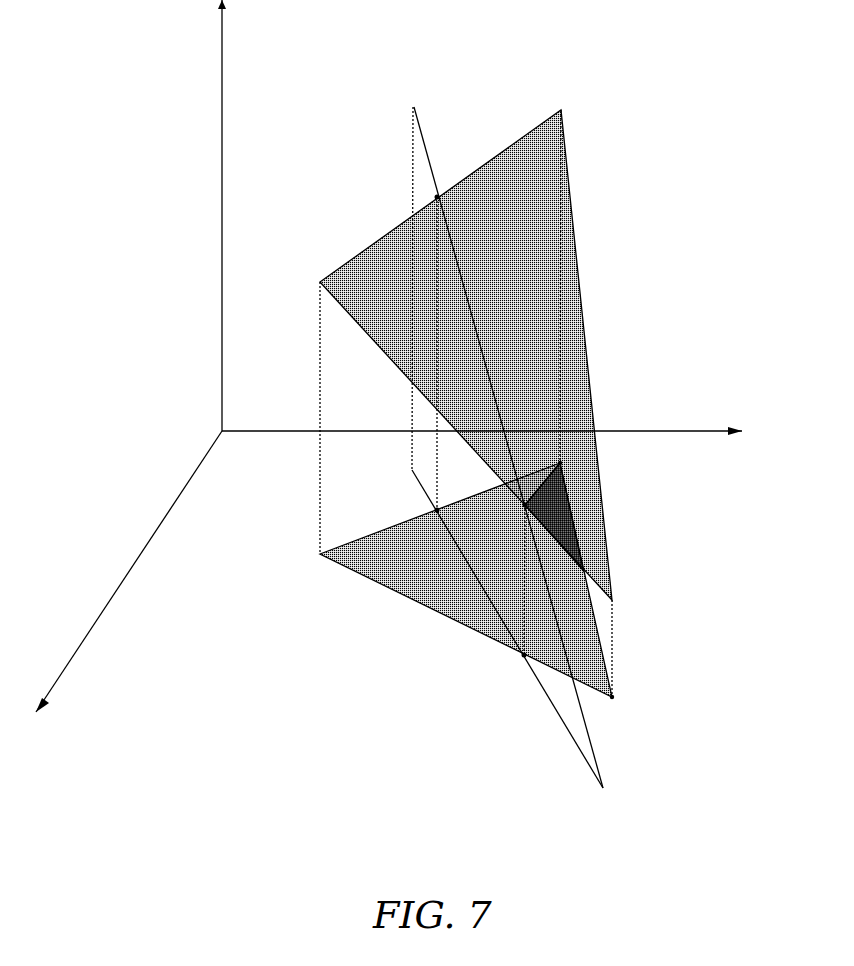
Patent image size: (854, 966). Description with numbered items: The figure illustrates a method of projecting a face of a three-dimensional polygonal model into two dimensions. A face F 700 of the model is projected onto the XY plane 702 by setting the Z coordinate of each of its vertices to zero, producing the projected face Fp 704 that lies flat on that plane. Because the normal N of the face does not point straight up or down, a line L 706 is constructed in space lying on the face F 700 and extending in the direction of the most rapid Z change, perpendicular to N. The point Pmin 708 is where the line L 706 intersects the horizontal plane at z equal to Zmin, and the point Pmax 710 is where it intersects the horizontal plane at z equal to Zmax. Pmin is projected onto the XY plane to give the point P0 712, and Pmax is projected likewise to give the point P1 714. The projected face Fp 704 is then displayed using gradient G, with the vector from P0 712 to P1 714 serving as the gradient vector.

The face F 700 is at (488, 197).
The XY plane 702 is at (178, 543).
The projected face Fp 704 is at (423, 583).
The line L 706 is at (418, 116).
The point Pmin 708 is at (560, 463).
The point Pmax 710 is at (437, 197).
The point P0 712 is at (524, 657).
The point P1 714 is at (437, 510).